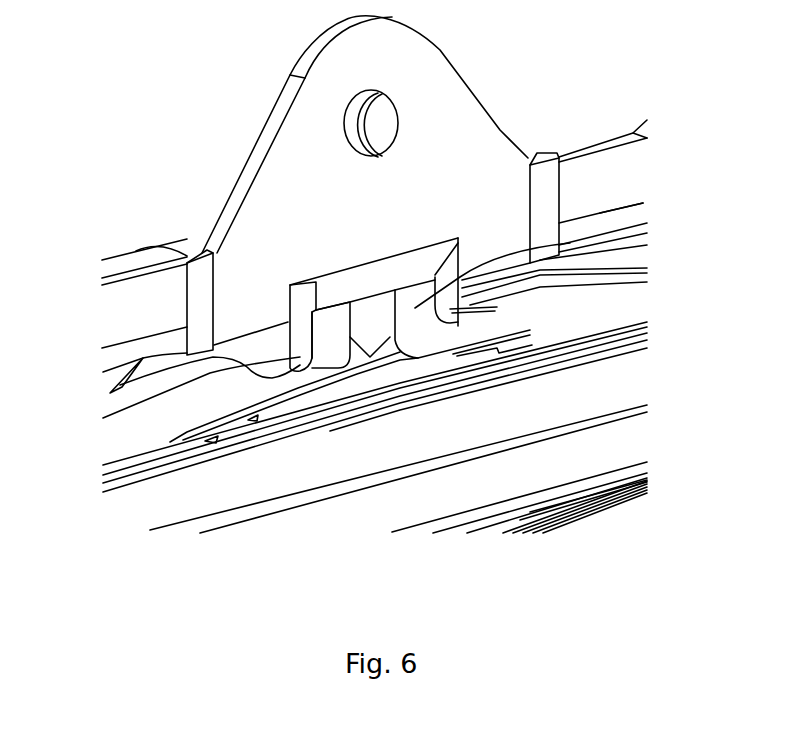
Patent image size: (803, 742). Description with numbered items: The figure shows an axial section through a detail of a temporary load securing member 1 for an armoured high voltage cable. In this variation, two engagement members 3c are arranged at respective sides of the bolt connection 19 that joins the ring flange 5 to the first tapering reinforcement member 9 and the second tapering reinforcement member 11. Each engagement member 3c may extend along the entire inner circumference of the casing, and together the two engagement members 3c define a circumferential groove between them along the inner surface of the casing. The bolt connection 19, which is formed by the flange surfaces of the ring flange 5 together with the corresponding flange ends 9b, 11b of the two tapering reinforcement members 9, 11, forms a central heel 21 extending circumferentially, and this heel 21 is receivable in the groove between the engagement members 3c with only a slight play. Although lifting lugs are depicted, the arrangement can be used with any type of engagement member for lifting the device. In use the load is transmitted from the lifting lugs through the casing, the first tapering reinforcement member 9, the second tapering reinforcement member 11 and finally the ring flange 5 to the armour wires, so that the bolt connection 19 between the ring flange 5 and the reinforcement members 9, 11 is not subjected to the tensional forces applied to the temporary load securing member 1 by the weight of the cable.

The temporary load securing member 1 is at (183, 199).
The engagement member 3c is at (302, 337).
The ring flange 5 is at (400, 374).
The first tapering reinforcement member 9 is at (140, 427).
The flange end 9b is at (325, 338).
The second tapering reinforcement member 11 is at (603, 299).
The flange end 11b is at (643, 203).
The bolt connection 19 is at (425, 279).
The central heel 21 is at (351, 289).